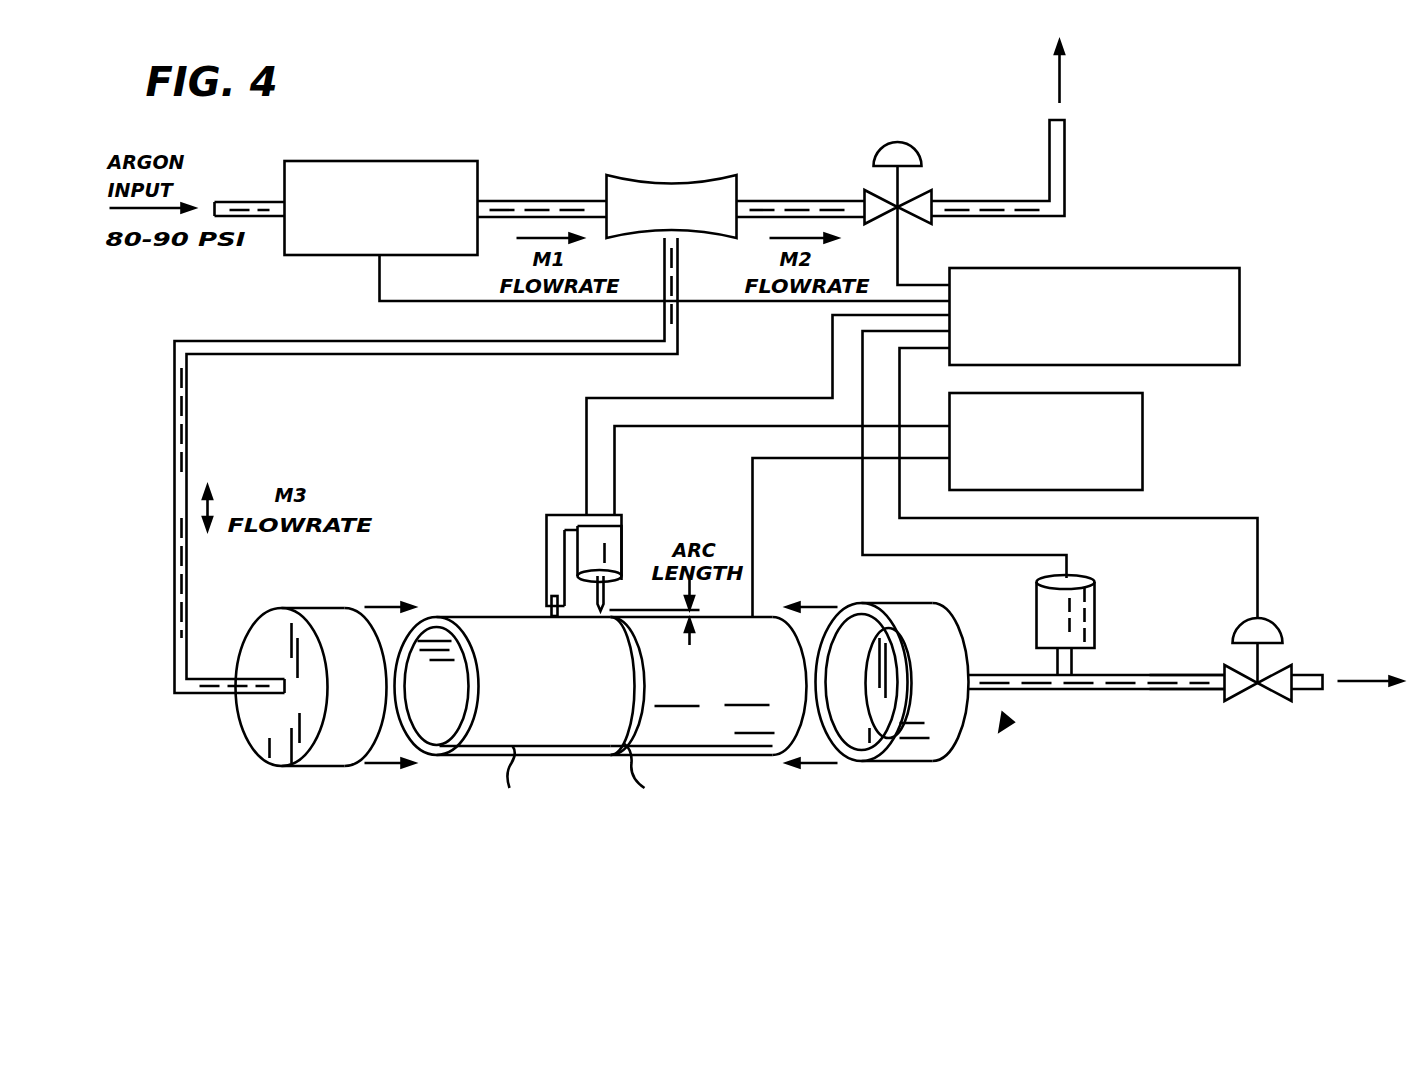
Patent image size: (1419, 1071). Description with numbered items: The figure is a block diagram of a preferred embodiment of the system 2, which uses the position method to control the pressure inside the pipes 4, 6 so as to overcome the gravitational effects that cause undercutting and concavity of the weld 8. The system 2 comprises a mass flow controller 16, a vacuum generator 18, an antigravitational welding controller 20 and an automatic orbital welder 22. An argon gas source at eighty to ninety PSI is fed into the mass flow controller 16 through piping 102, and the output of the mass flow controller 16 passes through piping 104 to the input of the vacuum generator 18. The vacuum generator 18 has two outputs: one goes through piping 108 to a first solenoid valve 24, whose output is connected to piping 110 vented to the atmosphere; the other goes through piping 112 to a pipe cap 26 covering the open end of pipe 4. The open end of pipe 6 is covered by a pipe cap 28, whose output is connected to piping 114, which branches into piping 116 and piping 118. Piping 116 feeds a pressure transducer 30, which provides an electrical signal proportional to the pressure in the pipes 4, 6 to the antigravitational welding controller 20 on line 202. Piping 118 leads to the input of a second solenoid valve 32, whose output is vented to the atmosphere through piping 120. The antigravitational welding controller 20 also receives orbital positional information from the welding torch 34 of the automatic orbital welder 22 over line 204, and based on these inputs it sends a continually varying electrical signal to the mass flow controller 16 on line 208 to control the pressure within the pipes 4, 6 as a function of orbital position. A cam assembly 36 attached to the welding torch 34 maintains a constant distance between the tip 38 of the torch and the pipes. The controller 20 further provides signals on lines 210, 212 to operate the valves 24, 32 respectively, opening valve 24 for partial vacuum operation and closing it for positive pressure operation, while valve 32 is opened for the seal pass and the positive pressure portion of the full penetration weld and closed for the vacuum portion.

The system 2 is at (1010, 728).
The pipe 4 is at (472, 746).
The pipe 6 is at (766, 742).
The weld 8 is at (648, 700).
The mass flow controller 16 is at (432, 163).
The vacuum generator 18 is at (740, 178).
The antigravitational welding controller 20 is at (1232, 282).
The automatic orbital welder 22 is at (1140, 422).
The valve 24 is at (900, 145).
The pipe cap 26 is at (305, 608).
The pipe cap 28 is at (930, 577).
The pressure transducer 30 is at (1095, 607).
The valve 32 is at (1270, 620).
The welding torch 34 is at (618, 538).
The cam assembly 36 is at (547, 555).
The tip 38 is at (595, 593).
The piping 102 is at (240, 204).
The piping 104 is at (520, 203).
The piping 108 is at (760, 203).
The piping 110 is at (1065, 140).
The piping 112 is at (425, 355).
The piping 114 is at (1010, 685).
The piping 116 is at (1072, 663).
The piping 118 is at (1167, 683).
The piping 120 is at (1320, 690).
The line 202 is at (1000, 555).
The line 204 is at (683, 398).
The line 208 is at (380, 291).
The line 210 is at (898, 260).
The line 212 is at (1262, 530).